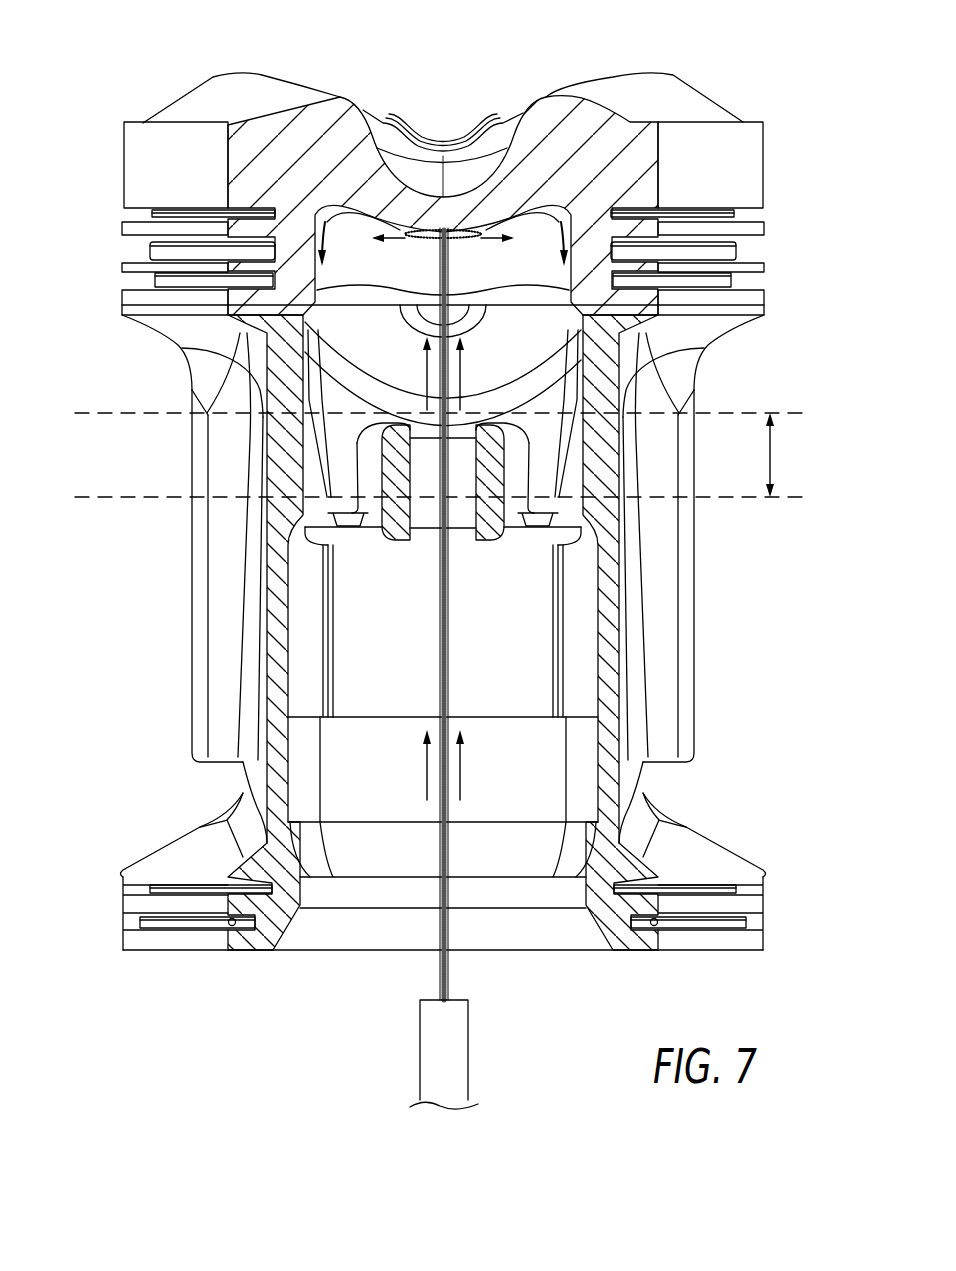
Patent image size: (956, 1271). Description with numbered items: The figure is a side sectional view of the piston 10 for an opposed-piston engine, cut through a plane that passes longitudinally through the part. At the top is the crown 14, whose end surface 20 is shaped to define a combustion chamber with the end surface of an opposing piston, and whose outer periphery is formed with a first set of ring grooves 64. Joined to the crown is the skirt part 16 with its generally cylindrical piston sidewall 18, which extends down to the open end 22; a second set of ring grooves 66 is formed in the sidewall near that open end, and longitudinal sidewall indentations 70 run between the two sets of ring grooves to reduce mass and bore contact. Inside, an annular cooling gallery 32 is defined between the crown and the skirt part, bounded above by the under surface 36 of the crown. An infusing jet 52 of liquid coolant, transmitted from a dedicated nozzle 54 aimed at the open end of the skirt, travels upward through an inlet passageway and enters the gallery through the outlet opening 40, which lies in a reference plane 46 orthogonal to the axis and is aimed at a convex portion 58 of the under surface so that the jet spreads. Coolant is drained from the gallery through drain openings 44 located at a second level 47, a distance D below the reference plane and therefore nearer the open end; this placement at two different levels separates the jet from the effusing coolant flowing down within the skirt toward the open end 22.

The piston 10 is at (103, 212).
The crown 14 is at (208, 98).
The skirt part 16 is at (153, 331).
The piston sidewall 18 is at (722, 624).
The end surface 20 is at (388, 110).
The open end 22 is at (560, 952).
The cooling gallery 32 is at (323, 212).
The under surface 36 is at (503, 228).
The outlet opening 40 is at (470, 430).
The drain opening 44 is at (345, 520).
The reference plane 46 is at (792, 413).
The second level 47 is at (792, 497).
The infusing jet 52 is at (440, 975).
The nozzle 54 is at (458, 1047).
The convex portion 58 is at (440, 252).
The first set of ring grooves 64 is at (787, 205).
The second set of ring grooves 66 is at (787, 868).
The sidewall indentations 70 is at (243, 762).